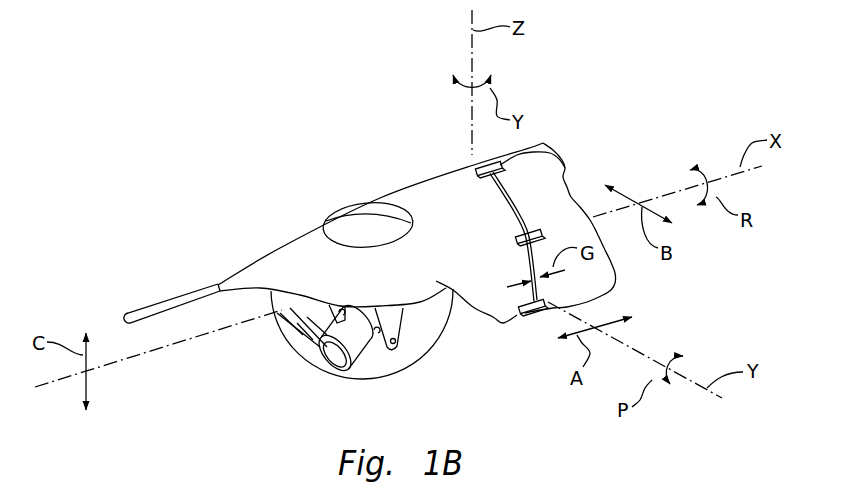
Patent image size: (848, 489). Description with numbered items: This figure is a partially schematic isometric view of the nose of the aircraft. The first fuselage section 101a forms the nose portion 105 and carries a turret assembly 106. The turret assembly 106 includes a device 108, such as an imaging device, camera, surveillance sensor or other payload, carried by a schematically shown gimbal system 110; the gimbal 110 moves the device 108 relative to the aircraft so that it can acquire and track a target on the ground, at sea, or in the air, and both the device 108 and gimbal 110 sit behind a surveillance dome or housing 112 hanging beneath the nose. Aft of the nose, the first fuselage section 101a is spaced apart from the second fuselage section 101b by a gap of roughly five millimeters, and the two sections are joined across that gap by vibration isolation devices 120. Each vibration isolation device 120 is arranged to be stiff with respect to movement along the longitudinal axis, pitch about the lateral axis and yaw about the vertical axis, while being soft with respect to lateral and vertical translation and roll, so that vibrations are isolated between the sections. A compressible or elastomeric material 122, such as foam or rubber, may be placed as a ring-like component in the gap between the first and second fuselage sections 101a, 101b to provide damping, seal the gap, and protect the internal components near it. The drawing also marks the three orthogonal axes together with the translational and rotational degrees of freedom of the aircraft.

The nose portion 105 is at (435, 145).
The first fuselage section 101a is at (428, 190).
The second fuselage section 101b is at (545, 146).
The vibration isolation device 120 is at (565, 163).
The compressible material 122 is at (532, 317).
The surveillance dome 112 is at (360, 382).
The turret assembly 106 is at (275, 362).
The device 108 is at (333, 357).
The gimbal system 110 is at (400, 342).